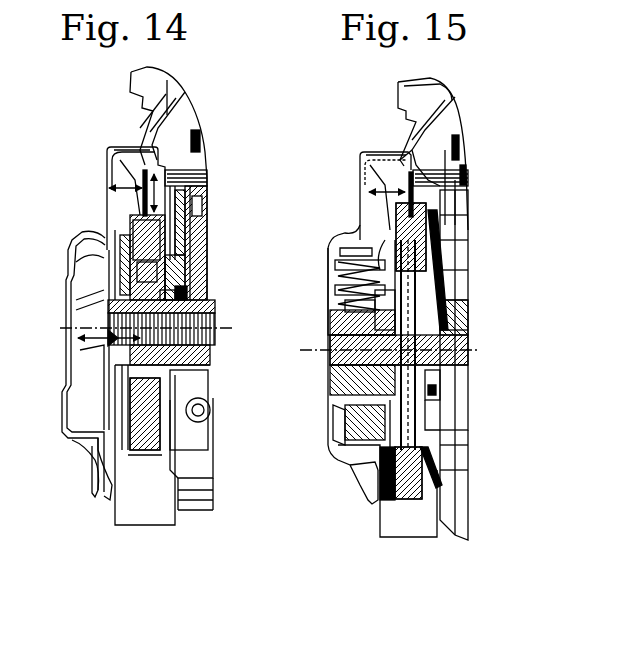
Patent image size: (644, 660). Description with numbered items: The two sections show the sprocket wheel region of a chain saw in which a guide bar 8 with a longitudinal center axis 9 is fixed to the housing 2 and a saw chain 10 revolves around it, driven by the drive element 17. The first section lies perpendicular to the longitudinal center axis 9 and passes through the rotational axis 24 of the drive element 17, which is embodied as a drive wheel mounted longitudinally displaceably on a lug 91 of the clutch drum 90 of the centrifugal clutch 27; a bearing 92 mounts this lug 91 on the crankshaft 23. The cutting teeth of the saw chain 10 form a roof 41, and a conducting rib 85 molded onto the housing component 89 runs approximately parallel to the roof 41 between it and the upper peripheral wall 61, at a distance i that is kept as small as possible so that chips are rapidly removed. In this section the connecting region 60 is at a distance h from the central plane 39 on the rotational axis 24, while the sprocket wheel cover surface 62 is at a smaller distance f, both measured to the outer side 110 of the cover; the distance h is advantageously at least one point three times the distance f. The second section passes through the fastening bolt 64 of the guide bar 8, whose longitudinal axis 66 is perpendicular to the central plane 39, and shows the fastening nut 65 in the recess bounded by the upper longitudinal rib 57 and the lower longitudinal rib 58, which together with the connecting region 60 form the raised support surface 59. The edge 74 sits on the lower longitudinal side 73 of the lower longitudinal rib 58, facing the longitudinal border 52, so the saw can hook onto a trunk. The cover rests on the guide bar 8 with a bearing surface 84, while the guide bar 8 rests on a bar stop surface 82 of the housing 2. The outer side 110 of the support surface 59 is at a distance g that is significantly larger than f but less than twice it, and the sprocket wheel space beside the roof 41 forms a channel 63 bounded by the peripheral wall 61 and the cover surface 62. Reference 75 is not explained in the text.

In FIG. 15, the housing 2 is at (450, 462).
In FIG. 15, the guide bar 8 is at (432, 417).
In FIG. 14, the longitudinal center axis 9 is at (146, 332).
In FIG. 15, the longitudinal center axis 9 is at (414, 352).
In FIG. 14, the saw chain 10 is at (146, 453).
In FIG. 15, the saw chain 10 is at (426, 240).
In FIG. 14, the drive element 17 is at (190, 275).
In FIG. 14, the crankshaft 23 is at (204, 343).
In FIG. 14, the rotational axis 24 is at (216, 330).
In FIG. 14, the centrifugal clutch 27 is at (204, 440).
In FIG. 14, the central plane 39 is at (144, 460).
In FIG. 15, the central plane 39 is at (408, 505).
In FIG. 14, the roof 41 is at (143, 212).
In FIG. 15, the roof 41 is at (440, 200).
In FIG. 15, the longitudinal border 52 is at (374, 505).
In FIG. 14, the upper longitudinal rib 57 is at (72, 250).
In FIG. 14, the lower longitudinal rib 58 is at (62, 408).
In FIG. 15, the lower longitudinal rib 58 is at (326, 428).
In FIG. 15, the support surface 59 is at (321, 252).
In FIG. 14, the connecting region 60 is at (72, 297).
In FIG. 14, the upper peripheral wall 61 is at (122, 147).
In FIG. 15, the upper peripheral wall 61 is at (390, 150).
In FIG. 14, the sprocket wheel cover surface 62 is at (106, 175).
In FIG. 15, the sprocket wheel cover surface 62 is at (368, 175).
In FIG. 15, the channel 63 is at (413, 157).
In FIG. 15, the fastening bolt 64 is at (352, 357).
In FIG. 15, the fastening nut 65 is at (345, 322).
In FIG. 15, the longitudinal axis 66 is at (322, 350).
In FIG. 15, the lower longitudinal side 73 is at (330, 460).
In FIG. 15, the edge 74 is at (330, 462).
In FIG. 14, the hook 75 is at (92, 490).
In FIG. 15, the bar stop surface 82 is at (426, 302).
In FIG. 15, the bearing surface 84 is at (404, 320).
In FIG. 14, the conducting rib 85 is at (166, 182).
In FIG. 15, the conducting rib 85 is at (422, 180).
In FIG. 15, the housing component 89 is at (441, 103).
In FIG. 14, the clutch drum 90 is at (190, 480).
In FIG. 14, the lug 91 is at (186, 290).
In FIG. 14, the bearing 92 is at (172, 303).
In FIG. 14, the outer side 110 is at (70, 320).
In FIG. 15, the outer side 110 is at (350, 222).
In FIG. 14, the distance f is at (106, 165).
In FIG. 15, the distance f is at (387, 183).
In FIG. 15, the distance g is at (342, 247).
In FIG. 14, the distance h is at (96, 337).
In FIG. 14, the distance i is at (196, 193).